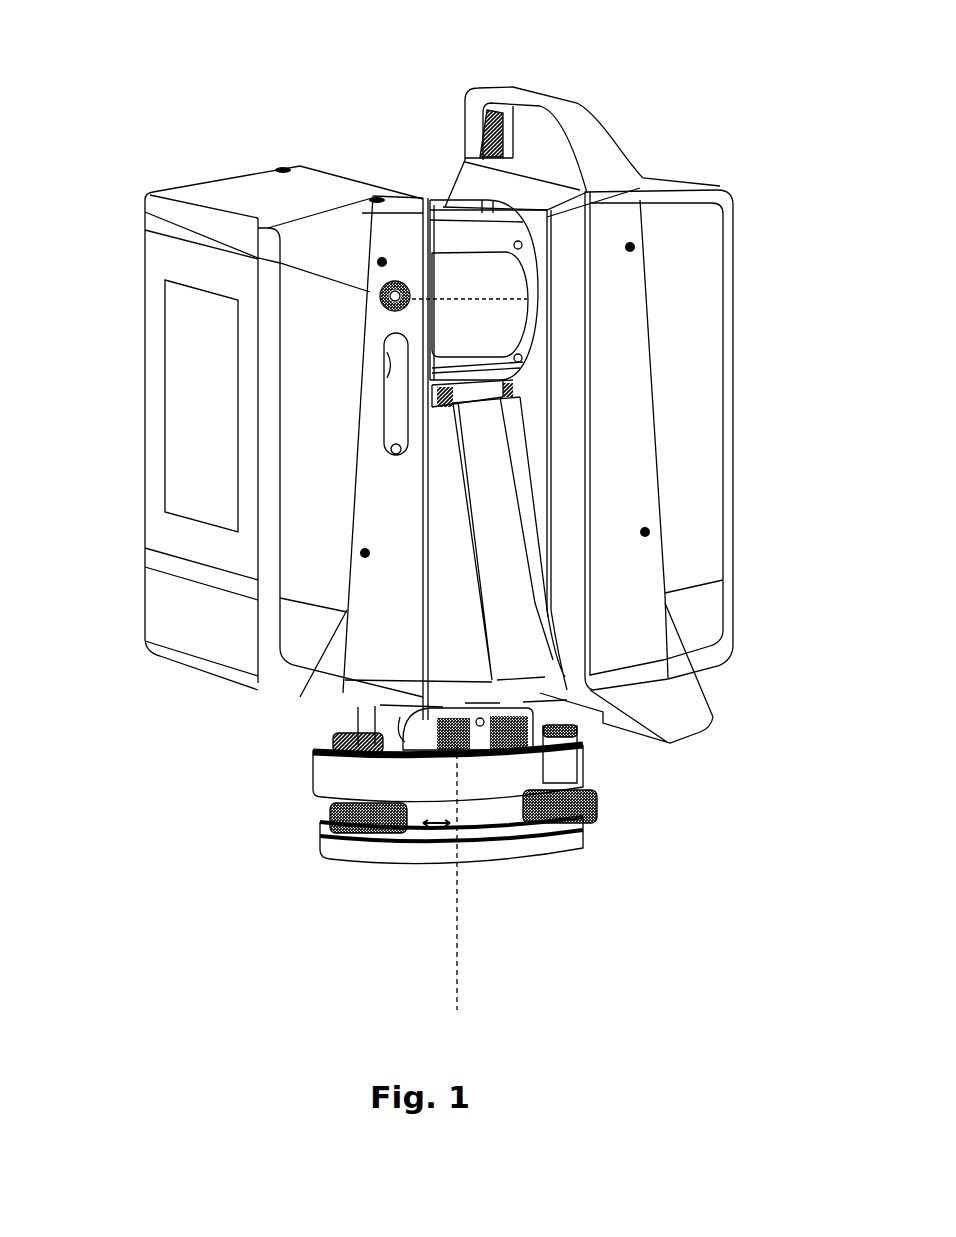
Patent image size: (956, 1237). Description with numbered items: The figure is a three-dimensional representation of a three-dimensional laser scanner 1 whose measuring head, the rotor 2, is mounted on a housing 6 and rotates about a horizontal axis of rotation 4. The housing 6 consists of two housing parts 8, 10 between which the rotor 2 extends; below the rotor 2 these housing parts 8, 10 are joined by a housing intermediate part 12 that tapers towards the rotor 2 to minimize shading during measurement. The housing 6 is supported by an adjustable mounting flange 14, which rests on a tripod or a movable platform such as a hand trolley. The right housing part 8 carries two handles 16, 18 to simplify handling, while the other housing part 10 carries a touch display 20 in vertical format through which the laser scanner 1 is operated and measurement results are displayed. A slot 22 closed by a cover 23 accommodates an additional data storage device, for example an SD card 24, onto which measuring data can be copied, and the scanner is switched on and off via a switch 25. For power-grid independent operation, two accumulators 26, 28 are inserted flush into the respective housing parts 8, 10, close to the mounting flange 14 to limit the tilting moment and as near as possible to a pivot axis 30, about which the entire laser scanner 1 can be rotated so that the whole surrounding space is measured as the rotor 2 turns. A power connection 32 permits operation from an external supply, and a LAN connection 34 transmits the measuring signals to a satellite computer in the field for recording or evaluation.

The 3D laser scanner 1 is at (770, 358).
The rotor 2 is at (437, 207).
The axis of rotation 4 is at (465, 305).
The housing 6 is at (738, 250).
The housing part 8 is at (718, 525).
The housing part 10 is at (140, 508).
The housing intermediate part 12 is at (447, 655).
The mounting flange 14 is at (588, 782).
The handle 16 is at (600, 112).
The handle 18 is at (715, 712).
The touch display 20 is at (160, 445).
The slot 22 is at (385, 375).
The cover 23 is at (390, 434).
The SD card 24 is at (368, 400).
The switch 25 is at (379, 292).
The accumulator 26 is at (735, 620).
The accumulator 28 is at (145, 590).
The pivot axis 30 is at (458, 963).
The power connection 32 is at (516, 710).
The LAN connection 34 is at (467, 703).